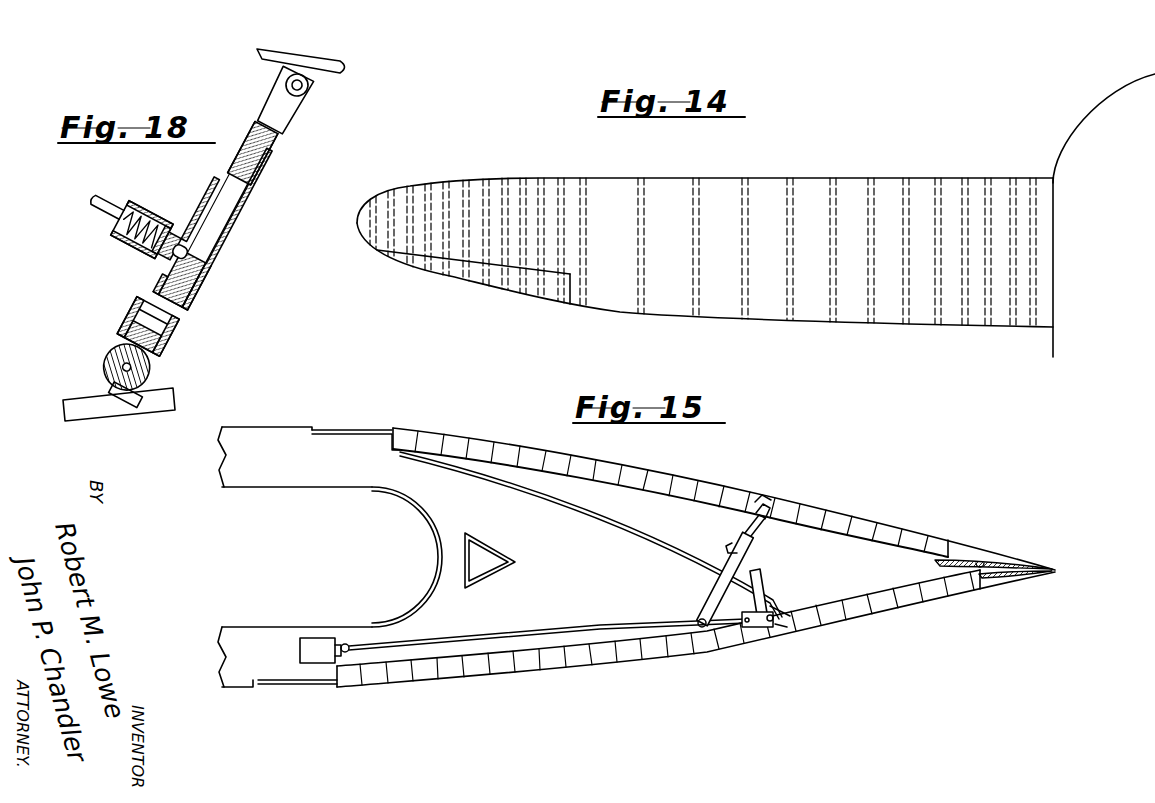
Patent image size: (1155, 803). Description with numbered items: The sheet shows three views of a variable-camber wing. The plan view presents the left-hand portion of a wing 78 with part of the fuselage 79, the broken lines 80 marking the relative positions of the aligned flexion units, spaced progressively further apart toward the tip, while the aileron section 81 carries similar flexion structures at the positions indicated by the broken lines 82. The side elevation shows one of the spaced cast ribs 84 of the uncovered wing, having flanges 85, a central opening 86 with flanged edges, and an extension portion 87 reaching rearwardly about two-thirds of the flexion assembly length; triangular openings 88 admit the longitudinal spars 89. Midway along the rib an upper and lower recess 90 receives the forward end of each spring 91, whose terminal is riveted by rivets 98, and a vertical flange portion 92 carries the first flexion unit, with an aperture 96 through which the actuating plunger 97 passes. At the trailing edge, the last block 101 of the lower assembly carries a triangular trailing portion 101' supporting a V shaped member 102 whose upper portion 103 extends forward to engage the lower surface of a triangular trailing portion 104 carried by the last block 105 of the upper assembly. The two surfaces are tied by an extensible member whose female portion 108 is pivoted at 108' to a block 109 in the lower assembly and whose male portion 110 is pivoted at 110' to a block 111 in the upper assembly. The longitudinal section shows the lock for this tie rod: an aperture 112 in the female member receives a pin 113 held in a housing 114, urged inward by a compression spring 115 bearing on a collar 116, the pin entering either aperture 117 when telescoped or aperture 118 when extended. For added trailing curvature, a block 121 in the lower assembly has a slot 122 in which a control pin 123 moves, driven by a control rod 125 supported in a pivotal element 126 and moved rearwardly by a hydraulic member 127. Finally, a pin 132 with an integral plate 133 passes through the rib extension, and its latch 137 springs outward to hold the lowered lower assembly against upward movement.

In FIG. 14, the wing 78 is at (769, 182).
In FIG. 14, the fuselage 79 is at (1104, 128).
In FIG. 14, the broken lines 80 is at (1013, 313).
In FIG. 14, the aileron section 81 is at (551, 296).
In FIG. 14, the broken lines 82 is at (518, 298).
In FIG. 15, the rib 84 is at (507, 613).
In FIG. 15, the flange 85 is at (262, 426).
In FIG. 15, the central opening 86 is at (262, 626).
In FIG. 15, the extension portion 87 is at (727, 630).
In FIG. 15, the triangular openings 88 is at (505, 556).
In FIG. 15, the longitudinal spars 89 is at (479, 546).
In FIG. 15, the recess 90 is at (272, 682).
In FIG. 15, the spring 91 is at (334, 429).
In FIG. 15, the vertical flange portion 92 is at (340, 688).
In FIG. 15, the aperture 96 is at (400, 452).
In FIG. 15, the actuating plunger 97 is at (380, 446).
In FIG. 15, the rivets 98 is at (344, 435).
In FIG. 15, the last block 101 is at (970, 614).
In FIG. 15, the triangular trailing portion 101' is at (1027, 602).
In FIG. 15, the V shaped member 102 is at (1057, 572).
In FIG. 15, the upper portion 103 is at (990, 563).
In FIG. 15, the triangular trailing portion 104 is at (968, 550).
In FIG. 15, the last block 105 is at (939, 531).
In FIG. 18, the female portion 108 is at (216, 221).
In FIG. 15, the female portion 108 is at (705, 579).
In FIG. 18, the pivot 108' is at (104, 364).
In FIG. 18, the block 109 is at (152, 395).
In FIG. 15, the block 109 is at (703, 632).
In FIG. 18, the male portion 110 is at (254, 193).
In FIG. 15, the male portion 110 is at (794, 503).
In FIG. 18, the pivot 110' is at (306, 100).
In FIG. 18, the block 111 is at (347, 68).
In FIG. 15, the block 111 is at (762, 497).
In FIG. 18, the aperture 112 is at (201, 286).
In FIG. 18, the pin 113 is at (93, 203).
In FIG. 15, the pin 113 is at (730, 546).
In FIG. 18, the housing 114 is at (134, 205).
In FIG. 18, the compression spring 115 is at (152, 214).
In FIG. 18, the collar 116 is at (158, 252).
In FIG. 18, the aperture 117 is at (205, 258).
In FIG. 18, the aperture 118 is at (137, 304).
In FIG. 15, the block 121 is at (762, 628).
In FIG. 15, the slot 122 is at (778, 622).
In FIG. 15, the control pin 123 is at (780, 628).
In FIG. 15, the control rod 125 is at (573, 638).
In FIG. 15, the pivotal element 126 is at (352, 646).
In FIG. 15, the hydraulic member 127 is at (318, 640).
In FIG. 15, the pin 132 is at (764, 581).
In FIG. 15, the plate 133 is at (790, 617).
In FIG. 15, the latch 137 is at (772, 581).